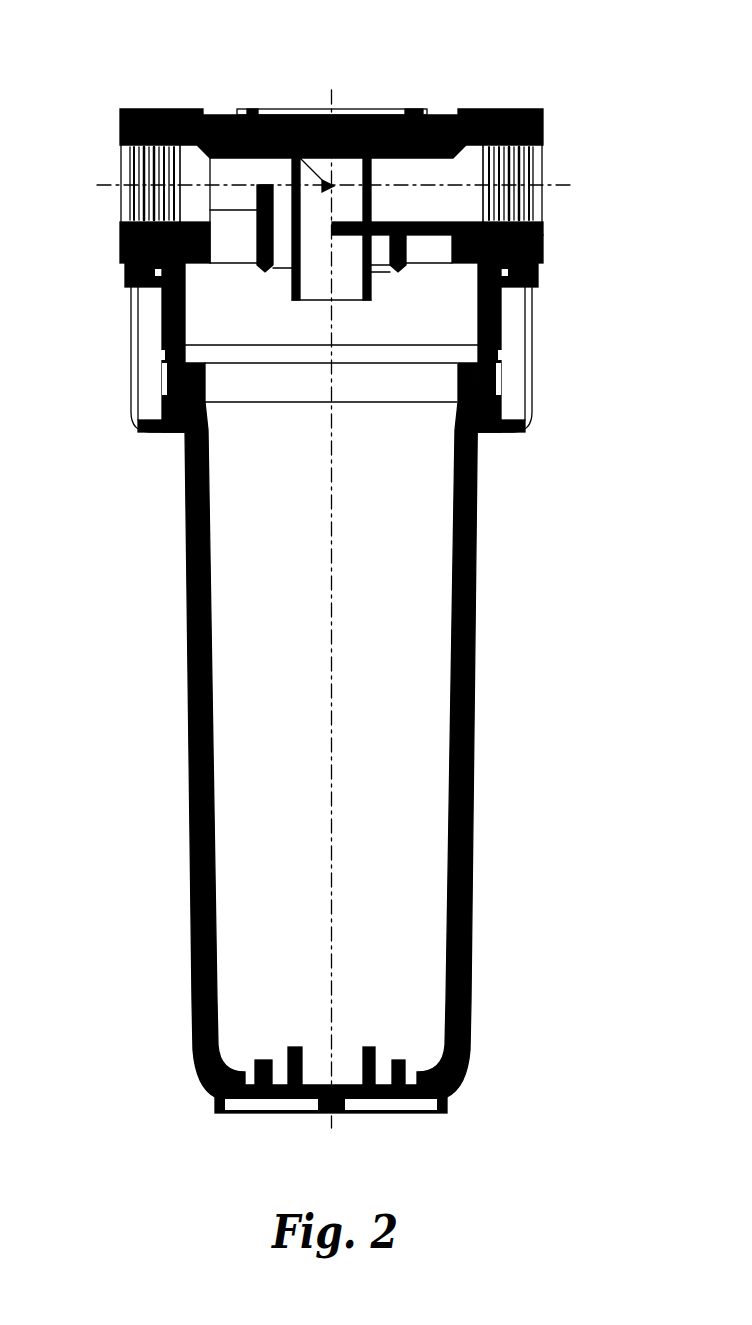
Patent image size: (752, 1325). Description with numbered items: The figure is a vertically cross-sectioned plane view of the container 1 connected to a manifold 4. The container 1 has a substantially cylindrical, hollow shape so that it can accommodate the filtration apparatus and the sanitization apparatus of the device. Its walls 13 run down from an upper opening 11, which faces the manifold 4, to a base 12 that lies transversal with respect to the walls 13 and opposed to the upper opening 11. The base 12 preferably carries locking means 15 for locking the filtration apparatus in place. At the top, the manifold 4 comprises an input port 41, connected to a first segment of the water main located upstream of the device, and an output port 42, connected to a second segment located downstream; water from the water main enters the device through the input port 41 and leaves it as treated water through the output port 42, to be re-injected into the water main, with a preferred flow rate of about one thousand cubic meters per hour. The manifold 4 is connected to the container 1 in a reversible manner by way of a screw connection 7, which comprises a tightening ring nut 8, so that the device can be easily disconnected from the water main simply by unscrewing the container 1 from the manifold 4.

The container 1 is at (546, 580).
The manifold 4 is at (463, 91).
The input port 41 is at (119, 172).
The output port 42 is at (544, 172).
The screw connection 7 is at (517, 323).
The tightening ring nut 8 is at (528, 368).
The upper opening 11 is at (250, 393).
The walls 13 is at (197, 685).
The locking means 15 is at (298, 1038).
The base 12 is at (420, 1094).